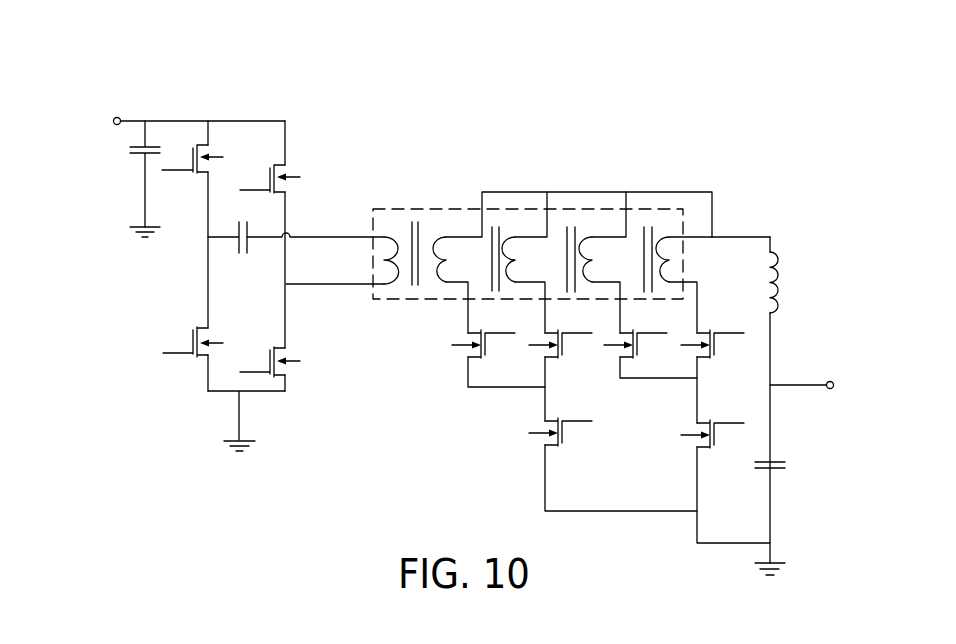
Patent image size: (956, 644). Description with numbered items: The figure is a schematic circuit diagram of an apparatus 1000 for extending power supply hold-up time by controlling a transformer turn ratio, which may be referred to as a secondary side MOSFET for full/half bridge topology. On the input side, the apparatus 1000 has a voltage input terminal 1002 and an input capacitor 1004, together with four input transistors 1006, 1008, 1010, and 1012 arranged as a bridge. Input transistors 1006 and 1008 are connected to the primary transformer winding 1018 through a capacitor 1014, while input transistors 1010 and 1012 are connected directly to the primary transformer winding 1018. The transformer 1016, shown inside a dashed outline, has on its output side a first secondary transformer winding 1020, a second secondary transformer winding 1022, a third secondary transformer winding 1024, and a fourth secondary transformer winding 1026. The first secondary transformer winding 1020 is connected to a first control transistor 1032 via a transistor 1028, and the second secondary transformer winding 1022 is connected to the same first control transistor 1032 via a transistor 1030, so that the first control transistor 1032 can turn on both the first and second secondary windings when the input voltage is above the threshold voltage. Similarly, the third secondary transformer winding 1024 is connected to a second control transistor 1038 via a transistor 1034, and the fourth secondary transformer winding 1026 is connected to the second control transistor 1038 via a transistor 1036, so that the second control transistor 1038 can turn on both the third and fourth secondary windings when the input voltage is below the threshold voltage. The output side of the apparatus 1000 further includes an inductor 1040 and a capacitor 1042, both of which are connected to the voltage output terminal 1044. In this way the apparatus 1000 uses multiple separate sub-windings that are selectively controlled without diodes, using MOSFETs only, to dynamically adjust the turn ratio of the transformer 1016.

The apparatus 1000 is at (88, 65).
The voltage input terminal 1002 is at (114, 123).
The input capacitor 1004 is at (130, 148).
The input transistor 1006 is at (198, 145).
The input transistor 1008 is at (194, 357).
The input transistor 1010 is at (276, 164).
The input transistor 1012 is at (298, 362).
The capacitor 1014 is at (243, 254).
The transformer 1016 is at (402, 208).
The primary transformer winding 1018 is at (383, 236).
The first secondary transformer winding 1020 is at (446, 237).
The second secondary transformer winding 1022 is at (515, 237).
The third secondary transformer winding 1024 is at (592, 237).
The fourth secondary transformer winding 1026 is at (669, 237).
The transistor 1028 is at (468, 358).
The transistor 1030 is at (533, 345).
The first control transistor 1032 is at (540, 433).
The transistor 1034 is at (634, 358).
The transistor 1036 is at (706, 358).
The second control transistor 1038 is at (707, 447).
The inductor 1040 is at (778, 285).
The capacitor 1042 is at (786, 469).
The voltage output terminal 1044 is at (831, 389).